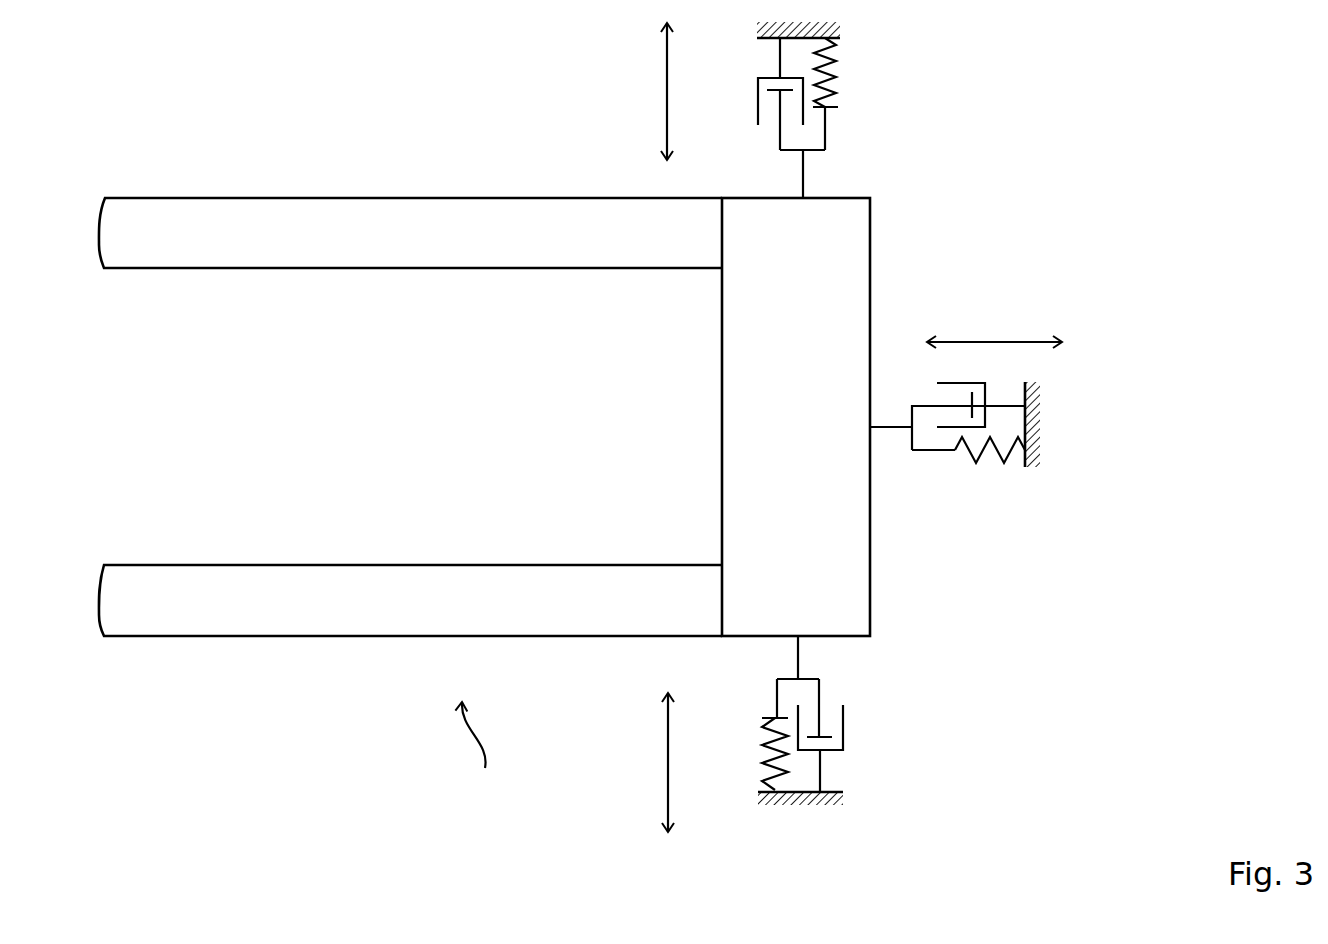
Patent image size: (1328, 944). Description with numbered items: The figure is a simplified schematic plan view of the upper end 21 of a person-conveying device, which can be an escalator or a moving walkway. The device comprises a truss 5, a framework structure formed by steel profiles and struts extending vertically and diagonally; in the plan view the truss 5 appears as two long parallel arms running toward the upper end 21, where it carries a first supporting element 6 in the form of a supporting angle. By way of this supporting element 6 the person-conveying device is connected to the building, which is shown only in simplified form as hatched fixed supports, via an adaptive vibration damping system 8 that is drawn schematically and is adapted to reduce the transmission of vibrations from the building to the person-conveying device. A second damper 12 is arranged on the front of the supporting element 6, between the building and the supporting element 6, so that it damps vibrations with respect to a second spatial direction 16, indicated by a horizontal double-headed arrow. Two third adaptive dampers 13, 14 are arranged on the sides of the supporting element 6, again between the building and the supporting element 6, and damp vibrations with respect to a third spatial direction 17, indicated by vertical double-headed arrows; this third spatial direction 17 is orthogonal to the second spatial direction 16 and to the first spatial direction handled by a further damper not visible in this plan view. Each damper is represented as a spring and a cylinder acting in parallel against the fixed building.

The truss 5 is at (486, 196).
The first supporting element 6 is at (853, 248).
The adaptive vibration damping system 8 is at (1152, 235).
The second damper 12 is at (973, 482).
The third adaptive damper 13 is at (858, 100).
The third adaptive damper 14 is at (877, 735).
The second spatial direction 16 is at (1013, 342).
The third spatial direction 17 is at (667, 75).
The upper end 21 is at (483, 754).